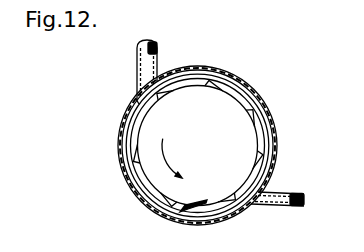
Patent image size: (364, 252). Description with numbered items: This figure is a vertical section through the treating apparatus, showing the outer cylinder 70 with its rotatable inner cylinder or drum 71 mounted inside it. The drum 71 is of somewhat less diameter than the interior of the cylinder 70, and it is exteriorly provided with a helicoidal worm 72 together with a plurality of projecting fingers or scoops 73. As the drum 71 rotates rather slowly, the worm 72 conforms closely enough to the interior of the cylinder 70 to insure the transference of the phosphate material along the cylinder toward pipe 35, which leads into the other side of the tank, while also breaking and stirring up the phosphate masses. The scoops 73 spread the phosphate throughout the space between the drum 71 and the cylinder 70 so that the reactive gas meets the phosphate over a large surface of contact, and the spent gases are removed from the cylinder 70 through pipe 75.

The cylinder 70 is at (135, 190).
The rotatable inner cylinder or drum 71 is at (148, 160).
The worm 72 is at (132, 127).
The projecting fingers or scoops 73 is at (136, 99).
The pipe 75 is at (143, 72).
The pipe 35 is at (294, 193).